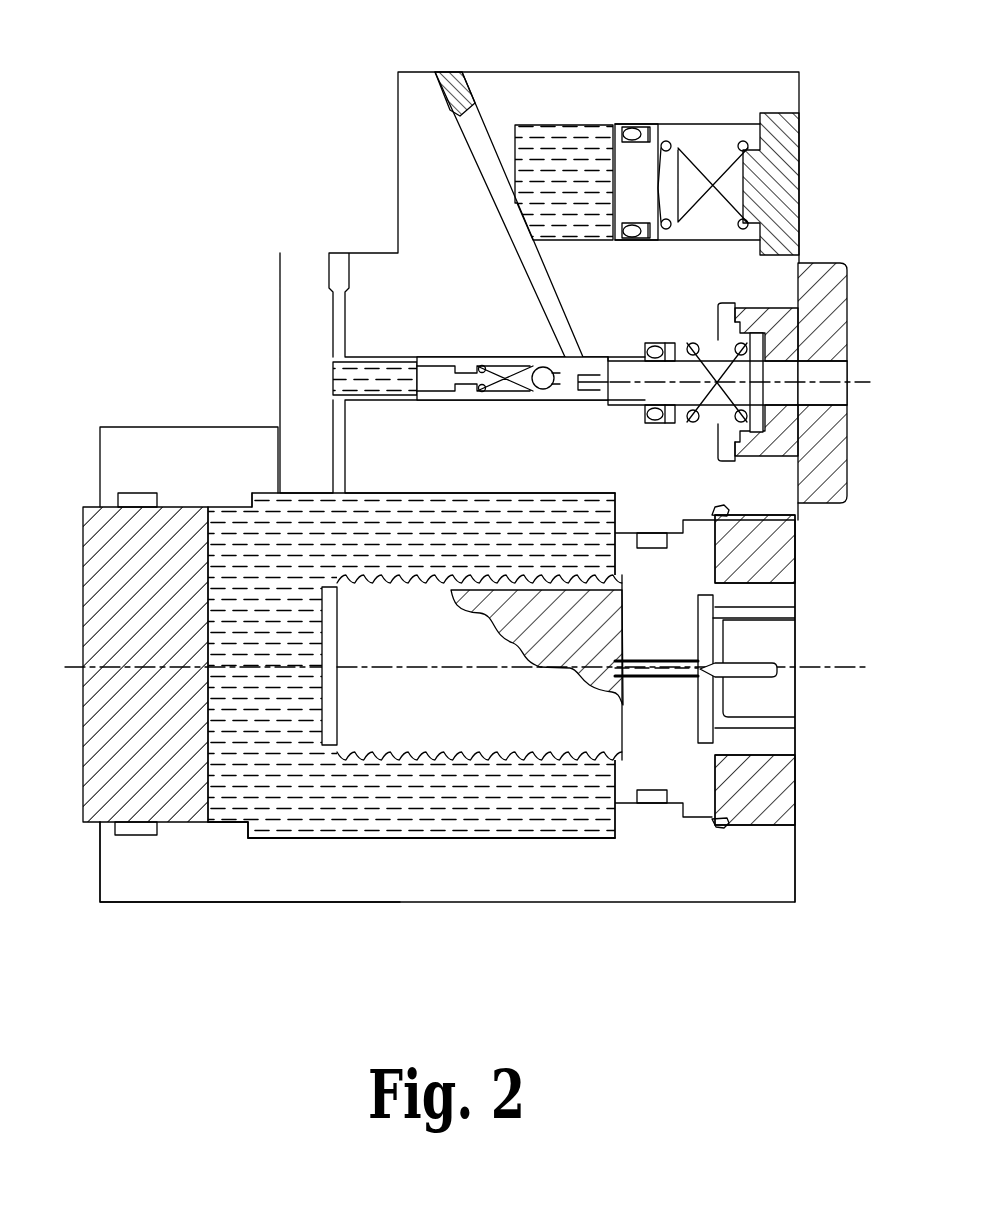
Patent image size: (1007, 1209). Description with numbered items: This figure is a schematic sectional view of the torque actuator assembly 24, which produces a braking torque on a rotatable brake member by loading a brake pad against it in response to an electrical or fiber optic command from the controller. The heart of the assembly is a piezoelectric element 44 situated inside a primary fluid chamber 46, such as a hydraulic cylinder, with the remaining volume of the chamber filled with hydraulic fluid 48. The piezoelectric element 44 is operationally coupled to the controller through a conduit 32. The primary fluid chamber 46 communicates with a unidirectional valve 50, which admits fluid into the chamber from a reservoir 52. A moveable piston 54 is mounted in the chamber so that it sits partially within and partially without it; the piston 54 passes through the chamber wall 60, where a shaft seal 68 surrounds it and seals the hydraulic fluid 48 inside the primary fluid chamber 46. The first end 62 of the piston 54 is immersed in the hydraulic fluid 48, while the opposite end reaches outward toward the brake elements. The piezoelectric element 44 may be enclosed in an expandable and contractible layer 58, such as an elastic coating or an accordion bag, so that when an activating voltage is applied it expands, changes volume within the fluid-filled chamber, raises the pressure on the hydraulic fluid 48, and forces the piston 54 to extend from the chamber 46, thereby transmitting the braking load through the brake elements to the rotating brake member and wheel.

The torque actuator assembly 24 is at (141, 232).
The conduit 32 is at (778, 672).
The piezoelectric element 44 is at (615, 612).
The primary fluid chamber 46 is at (392, 840).
The hydraulic fluid 48 is at (320, 810).
The unidirectional valve 50 is at (495, 370).
The reservoir 52 is at (563, 140).
The piston 54 is at (110, 582).
The expandable and contractible layer 58 is at (519, 727).
The chamber wall 60 is at (172, 858).
The first end 62 is at (212, 570).
The shaft seal 68 is at (128, 830).